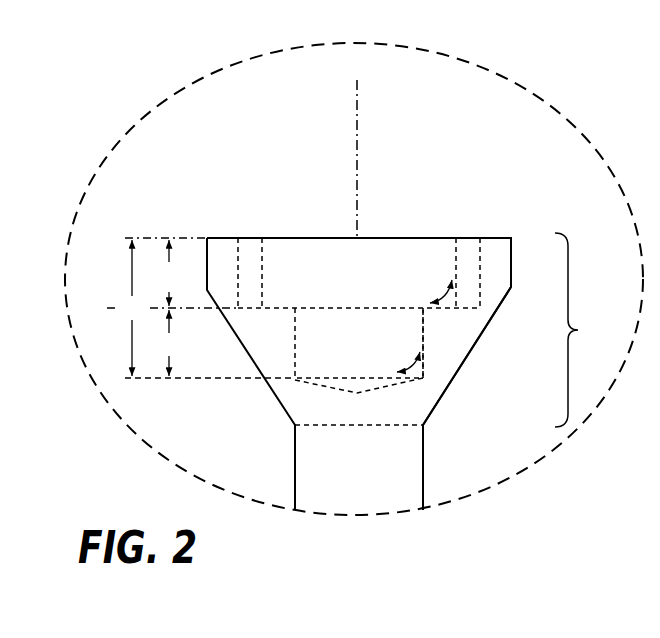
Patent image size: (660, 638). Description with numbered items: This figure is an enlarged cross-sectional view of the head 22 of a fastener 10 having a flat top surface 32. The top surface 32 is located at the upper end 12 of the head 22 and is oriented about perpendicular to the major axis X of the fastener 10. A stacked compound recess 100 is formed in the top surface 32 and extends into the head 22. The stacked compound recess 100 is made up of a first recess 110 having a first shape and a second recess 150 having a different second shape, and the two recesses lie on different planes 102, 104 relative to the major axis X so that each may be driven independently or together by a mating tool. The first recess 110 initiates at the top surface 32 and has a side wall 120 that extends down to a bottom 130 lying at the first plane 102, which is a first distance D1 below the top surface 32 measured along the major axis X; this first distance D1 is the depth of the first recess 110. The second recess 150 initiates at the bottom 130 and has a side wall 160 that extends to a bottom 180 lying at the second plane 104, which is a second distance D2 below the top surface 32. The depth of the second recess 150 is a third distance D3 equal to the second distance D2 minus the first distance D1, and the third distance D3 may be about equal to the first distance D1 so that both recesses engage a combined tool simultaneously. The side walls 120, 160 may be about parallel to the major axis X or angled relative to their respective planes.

The fastener 10 is at (220, 144).
The upper end 12 is at (223, 232).
The head 22 is at (578, 330).
The top surface 32 is at (501, 228).
The stacked compound recess 100 is at (391, 190).
The first plane 102 is at (200, 312).
The second plane 104 is at (226, 382).
The first recess 110 is at (494, 273).
The side wall 120 is at (455, 248).
The bottom 130 is at (283, 306).
The second recess 150 is at (436, 343).
The side wall 160 is at (422, 323).
The bottom 180 is at (327, 379).
The major axis X is at (356, 84).
The first distance D1 is at (169, 273).
The second distance D2 is at (162, 307).
The third distance D3 is at (169, 343).